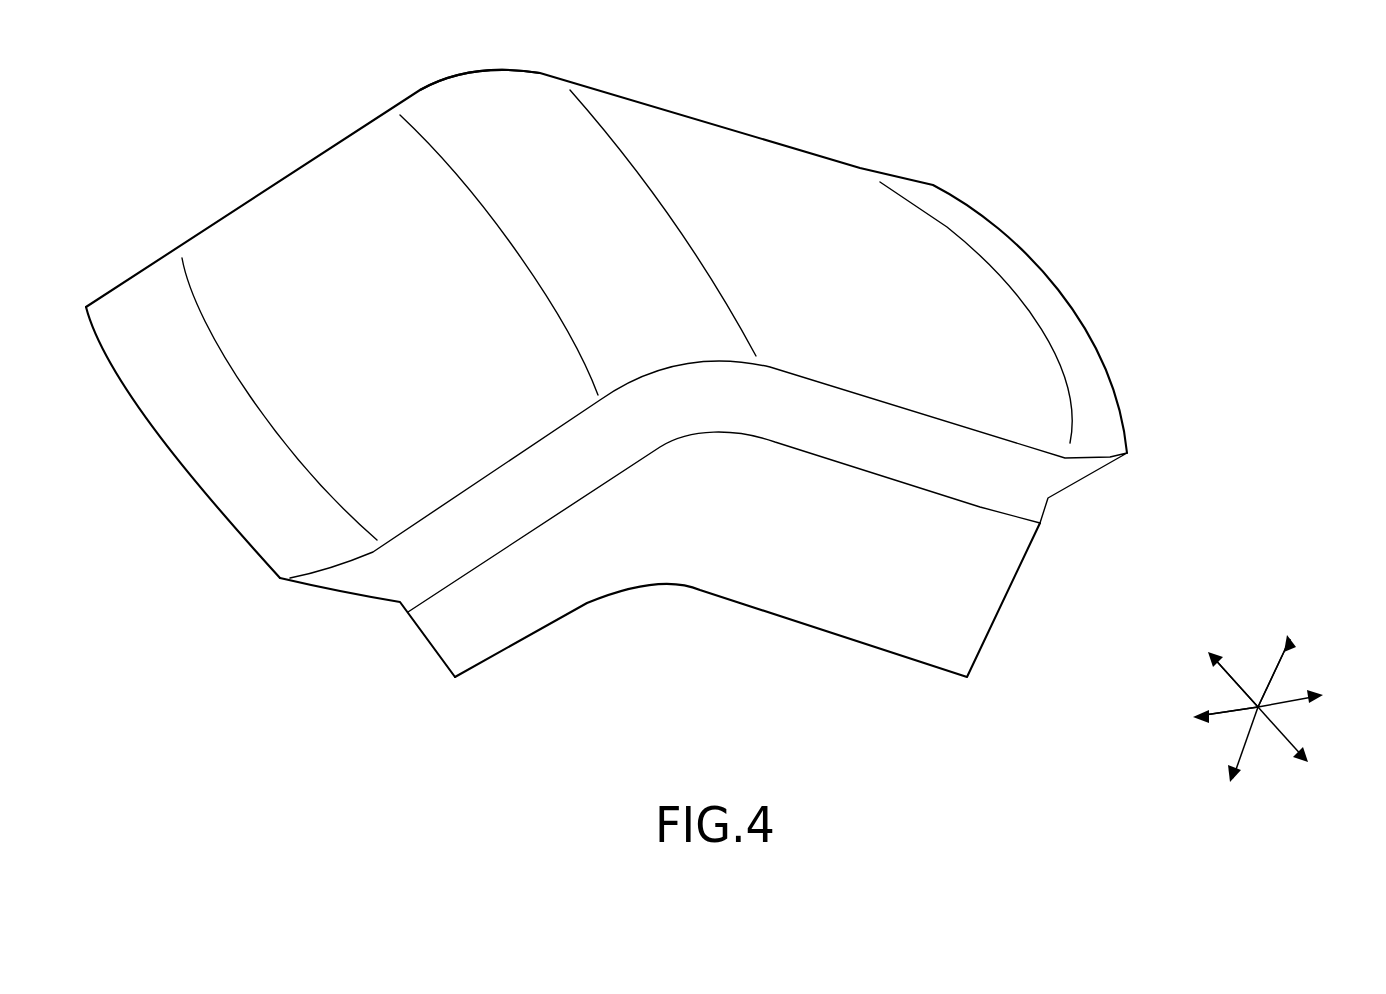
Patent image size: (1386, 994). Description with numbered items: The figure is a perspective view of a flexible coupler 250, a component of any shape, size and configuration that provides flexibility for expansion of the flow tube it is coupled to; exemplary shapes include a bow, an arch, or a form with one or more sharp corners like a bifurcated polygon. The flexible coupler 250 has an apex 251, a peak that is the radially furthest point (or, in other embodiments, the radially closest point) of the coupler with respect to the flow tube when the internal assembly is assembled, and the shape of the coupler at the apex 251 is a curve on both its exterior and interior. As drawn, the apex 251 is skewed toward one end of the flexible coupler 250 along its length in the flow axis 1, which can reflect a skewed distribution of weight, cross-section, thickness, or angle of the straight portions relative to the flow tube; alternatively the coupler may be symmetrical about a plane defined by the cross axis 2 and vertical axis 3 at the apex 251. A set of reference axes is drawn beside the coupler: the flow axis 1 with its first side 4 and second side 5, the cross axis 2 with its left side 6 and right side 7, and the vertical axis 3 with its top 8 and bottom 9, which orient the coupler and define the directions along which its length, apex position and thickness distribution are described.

The flexible coupler 250 is at (1022, 116).
The apex 251 is at (478, 128).
The flow axis 1 is at (1237, 712).
The cross axis 2 is at (1267, 687).
The vertical axis 3 is at (1235, 680).
The first side 4 is at (1207, 718).
The second side 5 is at (1313, 698).
The left side 6 is at (1287, 645).
The right side 7 is at (1235, 775).
The top 8 is at (1220, 648).
The bottom 9 is at (1300, 753).